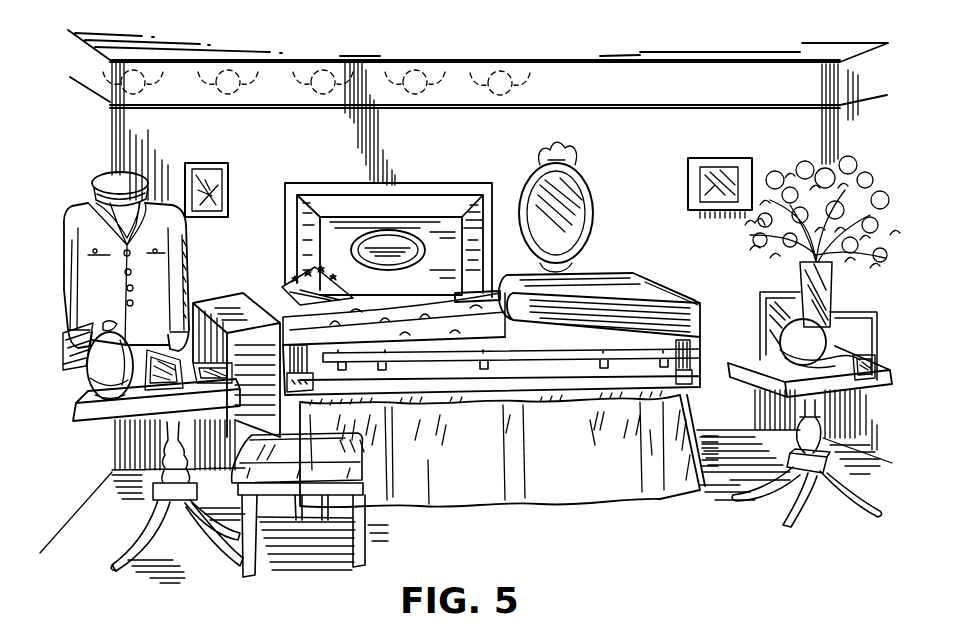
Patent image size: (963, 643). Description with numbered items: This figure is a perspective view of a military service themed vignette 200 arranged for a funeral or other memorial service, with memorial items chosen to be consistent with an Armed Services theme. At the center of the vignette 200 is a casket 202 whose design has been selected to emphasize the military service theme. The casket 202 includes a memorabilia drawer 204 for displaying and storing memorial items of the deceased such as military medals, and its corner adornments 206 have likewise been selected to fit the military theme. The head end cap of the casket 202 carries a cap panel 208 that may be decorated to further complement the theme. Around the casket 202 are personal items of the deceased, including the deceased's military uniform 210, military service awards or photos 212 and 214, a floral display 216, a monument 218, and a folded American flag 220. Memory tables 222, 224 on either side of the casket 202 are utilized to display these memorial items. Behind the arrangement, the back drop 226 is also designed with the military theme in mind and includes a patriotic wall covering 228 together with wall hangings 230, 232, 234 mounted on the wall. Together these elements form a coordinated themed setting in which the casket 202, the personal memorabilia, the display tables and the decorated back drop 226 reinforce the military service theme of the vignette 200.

The vignette 200 is at (289, 610).
The casket 202 is at (527, 397).
The memorabilia drawer 204 is at (460, 297).
The corner adornments 206 is at (700, 352).
The cap panel 208 is at (398, 222).
The military uniform 210 is at (70, 203).
The military service awards or photos 212 is at (66, 340).
The military service awards or photos 214 is at (123, 387).
The floral display 216 is at (800, 173).
The monument 218 is at (228, 308).
The folded American flag 220 is at (290, 247).
The memory table 222 is at (132, 567).
The memory table 224 is at (813, 517).
The back drop 226 is at (492, 136).
The patriotic wall covering 228 is at (664, 229).
The wall hanging 230 is at (206, 158).
The wall hanging 232 is at (584, 178).
The wall hanging 234 is at (698, 158).